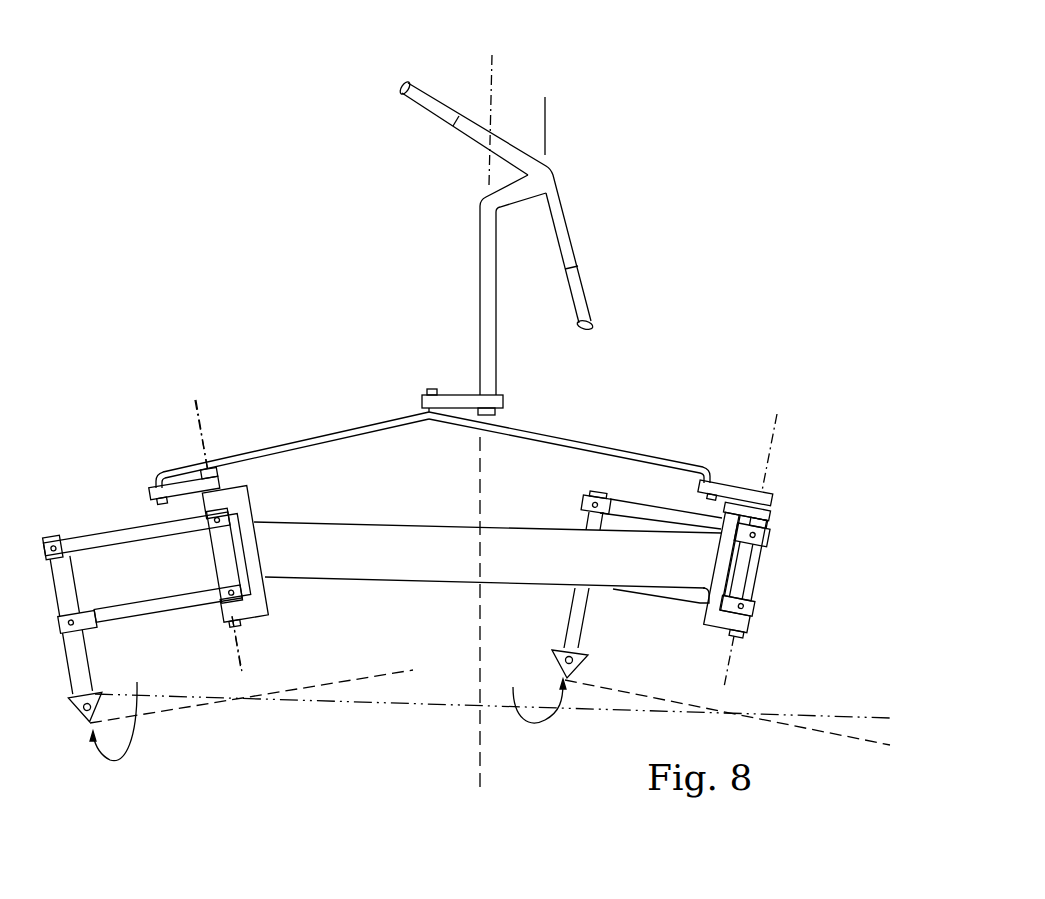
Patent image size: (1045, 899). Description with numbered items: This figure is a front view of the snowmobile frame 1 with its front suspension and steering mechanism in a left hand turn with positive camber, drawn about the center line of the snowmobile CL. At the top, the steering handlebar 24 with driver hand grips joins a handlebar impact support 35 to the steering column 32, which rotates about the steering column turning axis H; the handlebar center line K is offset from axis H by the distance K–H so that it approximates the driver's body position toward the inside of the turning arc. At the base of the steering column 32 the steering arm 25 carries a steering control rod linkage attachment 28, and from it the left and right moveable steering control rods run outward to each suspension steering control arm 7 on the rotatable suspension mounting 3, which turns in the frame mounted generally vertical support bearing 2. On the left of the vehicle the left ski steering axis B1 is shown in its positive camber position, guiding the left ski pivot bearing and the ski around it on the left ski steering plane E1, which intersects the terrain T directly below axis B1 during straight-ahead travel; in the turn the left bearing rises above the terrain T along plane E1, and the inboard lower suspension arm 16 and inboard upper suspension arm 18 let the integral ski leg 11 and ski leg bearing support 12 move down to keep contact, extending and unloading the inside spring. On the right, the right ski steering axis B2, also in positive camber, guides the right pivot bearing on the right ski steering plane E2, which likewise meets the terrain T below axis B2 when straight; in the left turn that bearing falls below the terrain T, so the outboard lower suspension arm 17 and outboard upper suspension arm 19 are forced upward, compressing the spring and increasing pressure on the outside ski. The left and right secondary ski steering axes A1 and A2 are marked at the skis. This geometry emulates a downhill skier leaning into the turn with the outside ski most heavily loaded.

The snowmobile frame 1 is at (707, 577).
The frame mounted generally vertical support bearing 2 is at (768, 523).
The rotatable suspension mounting 3 is at (762, 488).
The suspension steering control arm 7 is at (728, 490).
The ski leg 11 is at (556, 570).
The ski leg bearing support 12 is at (590, 521).
The inboard lower suspension arm 16 is at (753, 608).
The outboard lower suspension arm 17 is at (98, 612).
The inboard upper suspension arm 18 is at (620, 508).
The outboard upper suspension arm 19 is at (152, 532).
The steering handlebar 24 is at (473, 133).
The steering arm 25 is at (448, 400).
The steering control rod linkage attachment 28 is at (422, 393).
The steering column 32 is at (488, 295).
The handlebar impact support 35 is at (510, 194).
The steering column turning axis H is at (492, 48).
The handlebar center line K is at (554, 120).
The left ski steering axis B1 is at (778, 412).
The right ski steering axis B2 is at (196, 396).
The left secondary ski steering axis A1 is at (533, 693).
The right secondary ski steering axis A2 is at (117, 706).
The left ski steering plane E1 is at (617, 690).
The right ski steering plane E2 is at (385, 673).
The terrain T is at (433, 703).
The center line of snowmobile CL is at (478, 765).